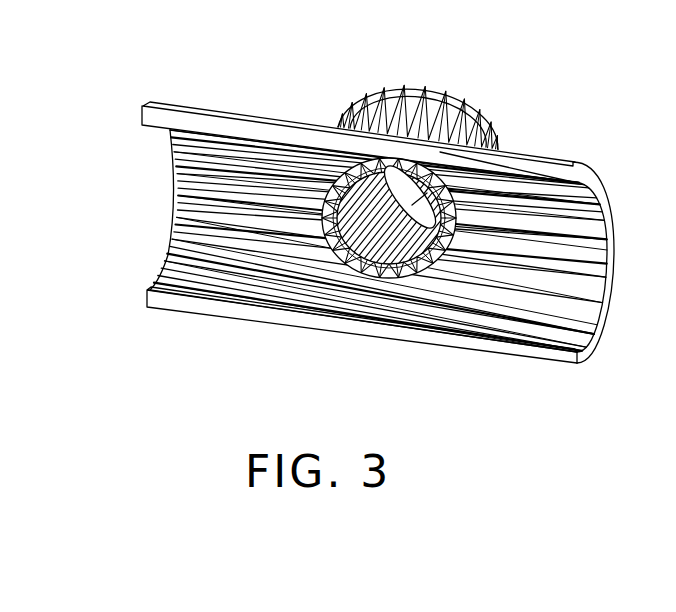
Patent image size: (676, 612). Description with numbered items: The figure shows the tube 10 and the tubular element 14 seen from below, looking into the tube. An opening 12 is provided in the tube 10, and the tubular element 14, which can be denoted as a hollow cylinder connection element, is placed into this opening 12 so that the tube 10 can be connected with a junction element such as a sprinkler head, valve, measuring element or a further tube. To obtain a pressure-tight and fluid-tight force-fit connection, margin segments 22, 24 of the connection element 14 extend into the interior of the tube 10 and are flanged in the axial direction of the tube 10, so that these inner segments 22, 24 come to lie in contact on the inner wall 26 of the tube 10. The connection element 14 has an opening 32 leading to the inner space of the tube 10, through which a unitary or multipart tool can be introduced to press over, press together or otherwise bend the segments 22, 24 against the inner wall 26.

The tube 10 is at (177, 122).
The opening 12 is at (352, 268).
The tubular element 14 is at (426, 95).
The margin segment 22 is at (173, 217).
The margin segment 24 is at (602, 298).
The inner wall 26 is at (200, 273).
The opening 32 is at (513, 175).